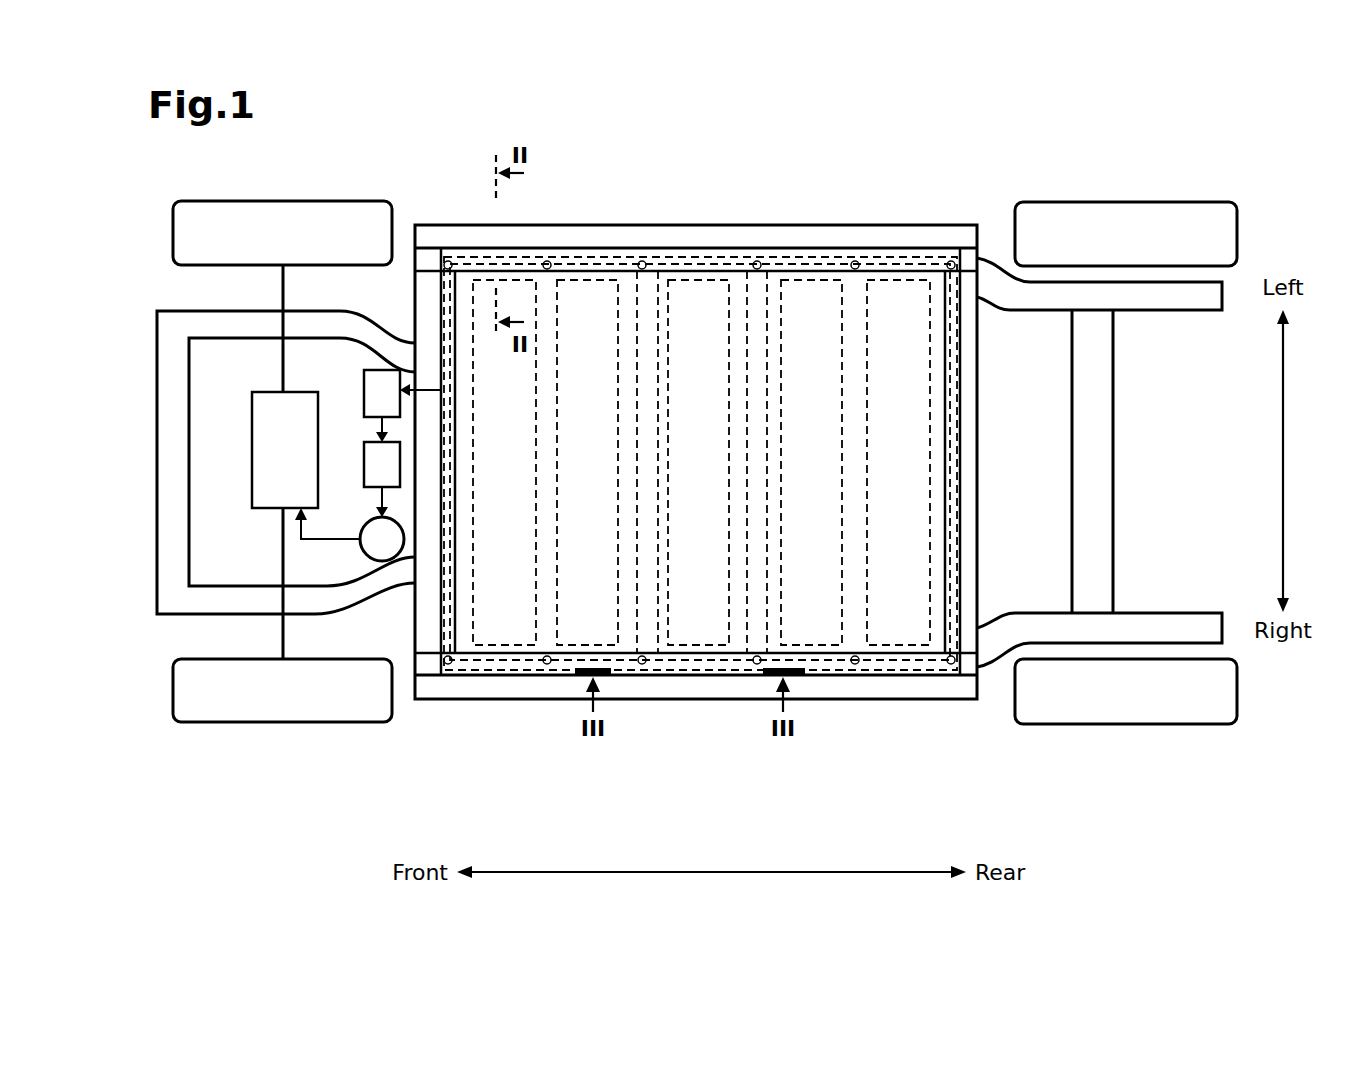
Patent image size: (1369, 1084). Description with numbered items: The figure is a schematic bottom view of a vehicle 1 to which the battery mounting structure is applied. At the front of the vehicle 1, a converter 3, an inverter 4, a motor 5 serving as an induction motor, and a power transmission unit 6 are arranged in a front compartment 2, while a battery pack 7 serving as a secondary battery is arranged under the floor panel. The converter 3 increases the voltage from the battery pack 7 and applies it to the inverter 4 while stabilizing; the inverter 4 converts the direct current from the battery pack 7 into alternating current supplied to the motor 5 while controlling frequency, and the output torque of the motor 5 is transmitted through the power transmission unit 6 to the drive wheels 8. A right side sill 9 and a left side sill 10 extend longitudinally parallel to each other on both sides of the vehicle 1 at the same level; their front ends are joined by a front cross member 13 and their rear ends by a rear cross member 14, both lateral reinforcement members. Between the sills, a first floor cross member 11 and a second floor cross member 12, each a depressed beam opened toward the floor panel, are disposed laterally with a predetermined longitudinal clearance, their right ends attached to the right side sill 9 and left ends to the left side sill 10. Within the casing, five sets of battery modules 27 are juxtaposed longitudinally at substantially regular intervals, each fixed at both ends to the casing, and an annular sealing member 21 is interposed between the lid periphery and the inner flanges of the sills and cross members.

The vehicle 1 is at (692, 182).
The front compartment 2 is at (208, 547).
The converter 3 is at (378, 368).
The inverter 4 is at (364, 466).
The motor 5 is at (366, 528).
The power transmission unit 6 is at (252, 466).
The battery pack 7 is at (828, 242).
The drive wheels 8 is at (283, 215).
The right side sill 9 is at (430, 685).
The left side sill 10 is at (913, 240).
The first floor cross member 11 is at (633, 282).
The second floor cross member 12 is at (762, 292).
The front cross member 13 is at (437, 247).
The rear cross member 14 is at (971, 264).
The annular sealing member 21 is at (920, 663).
The battery modules 27 is at (580, 287).